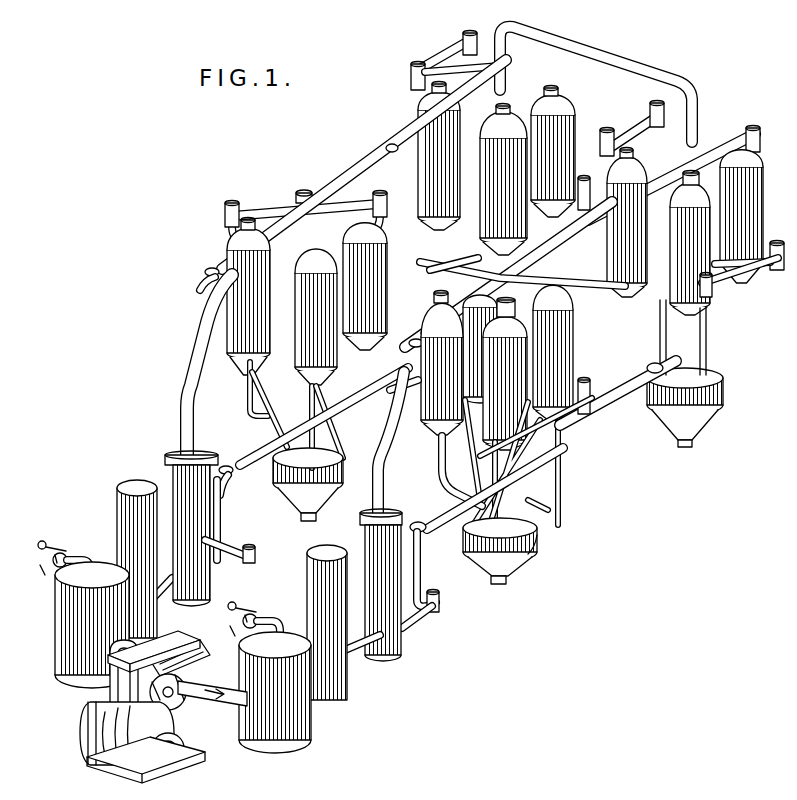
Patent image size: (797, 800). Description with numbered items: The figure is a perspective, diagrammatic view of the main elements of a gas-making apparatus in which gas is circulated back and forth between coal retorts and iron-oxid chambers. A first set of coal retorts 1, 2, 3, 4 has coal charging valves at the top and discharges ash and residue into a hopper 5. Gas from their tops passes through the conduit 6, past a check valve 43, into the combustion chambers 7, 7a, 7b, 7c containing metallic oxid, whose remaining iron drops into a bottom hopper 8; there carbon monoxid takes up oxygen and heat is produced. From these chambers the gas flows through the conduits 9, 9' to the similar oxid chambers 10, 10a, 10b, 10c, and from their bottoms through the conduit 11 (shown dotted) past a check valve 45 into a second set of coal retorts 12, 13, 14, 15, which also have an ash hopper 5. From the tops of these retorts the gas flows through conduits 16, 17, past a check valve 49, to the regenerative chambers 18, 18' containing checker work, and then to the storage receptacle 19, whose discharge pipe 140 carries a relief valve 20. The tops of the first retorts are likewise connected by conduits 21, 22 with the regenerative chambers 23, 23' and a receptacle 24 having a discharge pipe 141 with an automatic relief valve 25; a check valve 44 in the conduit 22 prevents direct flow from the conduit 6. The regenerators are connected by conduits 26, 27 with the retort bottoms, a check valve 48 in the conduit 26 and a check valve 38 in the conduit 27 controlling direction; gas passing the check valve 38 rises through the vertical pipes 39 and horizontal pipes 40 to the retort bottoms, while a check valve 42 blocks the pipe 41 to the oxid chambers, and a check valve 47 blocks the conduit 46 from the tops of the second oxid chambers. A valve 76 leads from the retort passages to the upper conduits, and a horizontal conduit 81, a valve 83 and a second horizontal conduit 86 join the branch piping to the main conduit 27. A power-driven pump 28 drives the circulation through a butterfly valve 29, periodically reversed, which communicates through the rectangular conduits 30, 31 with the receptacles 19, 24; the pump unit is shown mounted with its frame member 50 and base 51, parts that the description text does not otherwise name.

The coal retort 1 is at (392, 394).
The coal retort 2 is at (488, 416).
The coal retort 3 is at (478, 395).
The coal retort 4 is at (572, 349).
The hopper 5 is at (285, 492).
The conduit 6 is at (570, 232).
The combustion chamber 7 is at (640, 270).
The combustion chamber 7a is at (715, 150).
The combustion chamber 7b is at (700, 258).
The combustion chamber 7c is at (745, 205).
The bottom hopper 8 is at (678, 430).
The conduit 9 is at (596, 83).
The conduit 9' is at (522, 303).
The oxid chamber 10 is at (420, 172).
The oxid chamber 10a is at (430, 85).
The oxid chamber 10b is at (492, 210).
The oxid chamber 10c is at (607, 106).
The conduit 11 is at (410, 372).
The coal retort 12 is at (240, 316).
The coal retort 13 is at (308, 193).
The coal retort 14 is at (310, 350).
The coal retort 15 is at (390, 258).
The conduit 16 is at (248, 205).
The conduit 17 is at (196, 363).
The regenerative chamber 18 is at (199, 528).
The regenerative chamber 18' is at (117, 559).
The storage receptacle 19 is at (56, 642).
The relief valve 20 is at (70, 553).
The conduit 21 is at (446, 268).
The conduit 22 is at (388, 477).
The regenerative chamber 23 is at (362, 585).
The regenerative chamber 23' is at (310, 622).
The receptacle 24 is at (300, 722).
The automatic relief valve 25 is at (252, 612).
The conduit 26 is at (262, 453).
The conduit 27 is at (445, 517).
The pump 28 is at (82, 738).
The butterfly valve 29 is at (205, 655).
The rectangular conduit 30 is at (112, 685).
The rectangular conduit 31 is at (230, 706).
The check valve 38 is at (420, 518).
The vertical pipe 39 is at (247, 400).
The horizontal pipe 40 is at (582, 430).
The pipe 41 is at (622, 403).
The check valve 42 is at (647, 367).
The check valve 43 is at (574, 182).
The check valve 44 is at (414, 338).
The check valve 45 is at (423, 330).
The conduit 46 is at (350, 180).
The check valve 47 is at (391, 144).
The check valve 48 is at (230, 465).
The check valve 49 is at (205, 274).
The base plate 50 is at (172, 633).
The base 51 is at (183, 754).
The valve 76 is at (224, 211).
The horizontal conduit 81 is at (437, 450).
The valve 83 is at (590, 392).
The horizontal conduit 86 is at (540, 548).
The discharge pipe 140 is at (42, 578).
The discharge pipe 141 is at (230, 624).